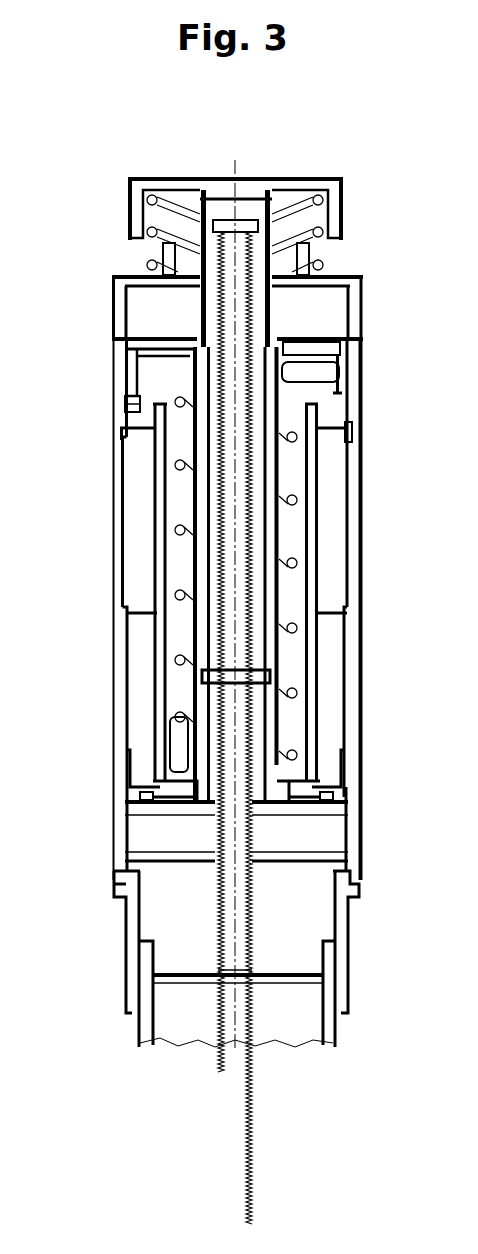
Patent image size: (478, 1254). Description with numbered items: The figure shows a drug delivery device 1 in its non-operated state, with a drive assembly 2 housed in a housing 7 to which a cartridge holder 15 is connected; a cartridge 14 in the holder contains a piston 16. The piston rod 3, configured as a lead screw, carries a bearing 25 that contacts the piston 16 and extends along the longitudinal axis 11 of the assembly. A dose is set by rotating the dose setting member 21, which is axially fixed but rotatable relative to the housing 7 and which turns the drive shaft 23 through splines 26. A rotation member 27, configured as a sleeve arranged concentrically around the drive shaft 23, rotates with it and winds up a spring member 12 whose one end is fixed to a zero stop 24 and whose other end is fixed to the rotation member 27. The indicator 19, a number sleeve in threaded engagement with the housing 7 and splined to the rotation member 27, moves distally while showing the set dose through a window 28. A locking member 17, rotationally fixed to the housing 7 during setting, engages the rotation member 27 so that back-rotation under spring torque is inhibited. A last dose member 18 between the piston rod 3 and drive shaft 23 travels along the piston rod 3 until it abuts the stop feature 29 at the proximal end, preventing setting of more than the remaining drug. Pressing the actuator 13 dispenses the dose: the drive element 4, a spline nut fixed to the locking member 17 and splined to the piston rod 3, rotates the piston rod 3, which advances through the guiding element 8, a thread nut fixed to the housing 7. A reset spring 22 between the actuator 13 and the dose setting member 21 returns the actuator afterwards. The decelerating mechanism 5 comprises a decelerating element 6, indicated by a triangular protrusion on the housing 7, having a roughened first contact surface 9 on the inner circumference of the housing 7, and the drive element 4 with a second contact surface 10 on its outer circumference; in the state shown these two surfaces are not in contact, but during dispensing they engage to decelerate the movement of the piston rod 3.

The drug delivery device 1 is at (104, 196).
The drive assembly 2 is at (173, 810).
The piston rod 3 is at (228, 388).
The drive element 4 is at (336, 810).
The decelerating mechanism 5 is at (381, 810).
The decelerating element 6 is at (348, 813).
The housing 7 is at (118, 623).
The guiding element 8 is at (152, 863).
The first contact surface 9 is at (133, 848).
The second contact surface 10 is at (128, 813).
The longitudinal axis 11 is at (237, 1012).
The spring member 12 is at (173, 408).
The actuator 13 is at (337, 186).
The cartridge 14 is at (143, 1000).
The cartridge holder 15 is at (132, 918).
The piston 16 is at (187, 1010).
The locking member 17 is at (305, 792).
The last dose member 18 is at (220, 678).
The indicator 19 is at (140, 533).
The dose setting member 21 is at (120, 295).
The reset spring 22 is at (318, 233).
The drive shaft 23 is at (272, 317).
The zero stop 24 is at (320, 347).
The bearing 25 is at (280, 972).
The splines 26 is at (287, 282).
The rotation member 27 is at (310, 448).
The window 28 is at (113, 478).
The stop feature 29 is at (221, 221).